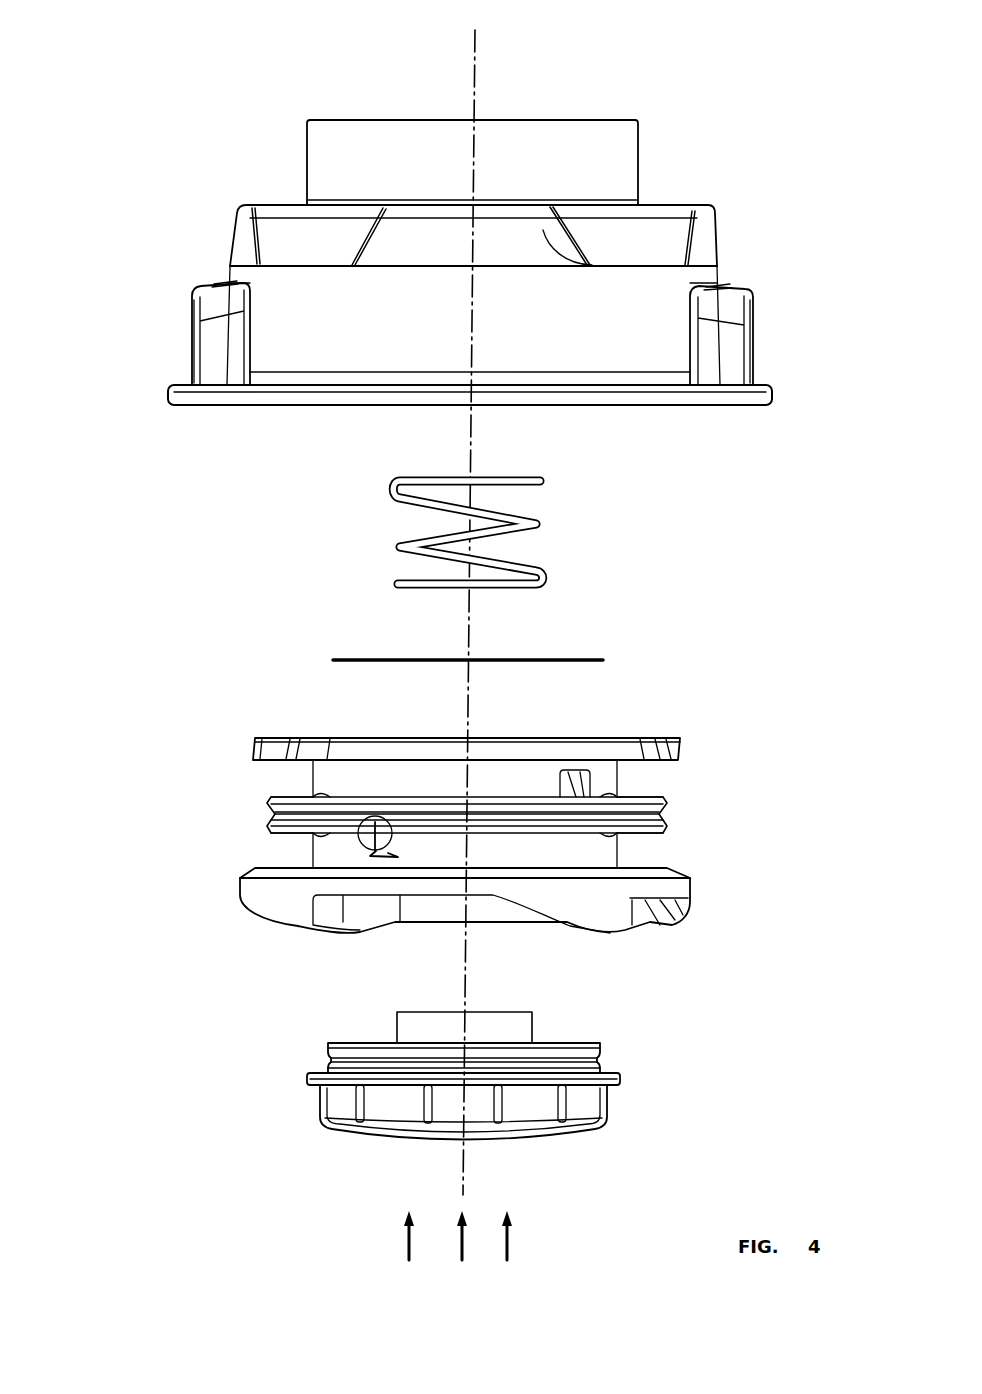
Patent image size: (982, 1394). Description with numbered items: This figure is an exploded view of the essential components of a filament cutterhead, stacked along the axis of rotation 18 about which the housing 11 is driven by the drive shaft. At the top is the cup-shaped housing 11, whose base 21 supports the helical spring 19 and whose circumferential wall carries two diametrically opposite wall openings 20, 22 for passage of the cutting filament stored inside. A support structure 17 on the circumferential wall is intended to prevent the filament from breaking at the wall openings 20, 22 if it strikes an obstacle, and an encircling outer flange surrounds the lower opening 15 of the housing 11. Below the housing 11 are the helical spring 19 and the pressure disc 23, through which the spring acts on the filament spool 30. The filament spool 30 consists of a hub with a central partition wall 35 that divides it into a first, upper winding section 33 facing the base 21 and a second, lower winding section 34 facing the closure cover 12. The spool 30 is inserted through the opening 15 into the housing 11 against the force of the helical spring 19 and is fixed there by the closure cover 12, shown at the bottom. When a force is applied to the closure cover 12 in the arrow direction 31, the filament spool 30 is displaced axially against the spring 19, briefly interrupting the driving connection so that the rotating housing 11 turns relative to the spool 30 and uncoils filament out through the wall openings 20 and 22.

The housing 11 is at (239, 237).
The closure cover 12 is at (540, 1115).
The lower opening 15 is at (462, 305).
The support structure 17 is at (197, 287).
The axis of rotation 18 is at (474, 42).
The helical spring 19 is at (535, 522).
The wall opening 20 is at (760, 355).
The base 21 is at (590, 264).
The wall opening 22 is at (197, 339).
The pressure disc 23 is at (582, 659).
The filament spool 30 is at (501, 793).
The arrow direction 31 is at (435, 1240).
The first winding section 33 is at (637, 781).
The second winding section 34 is at (637, 853).
The central partition wall 35 is at (405, 815).